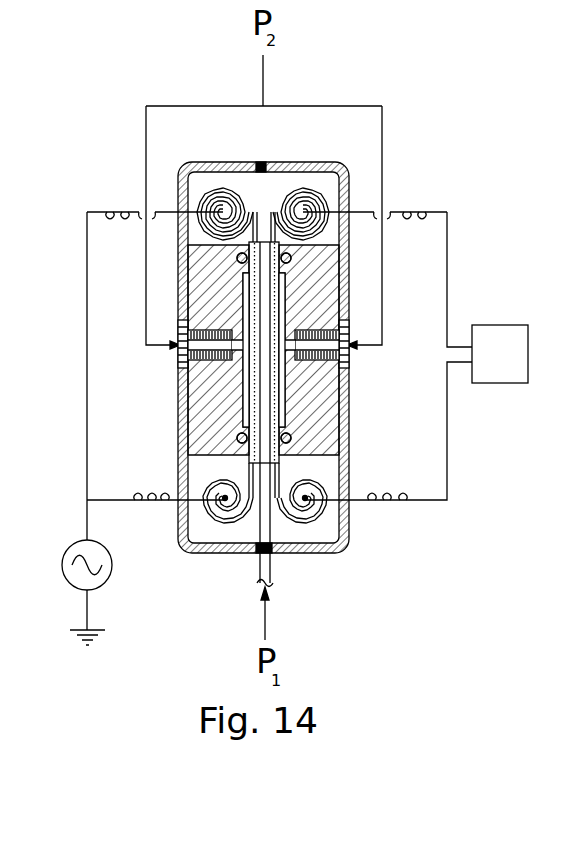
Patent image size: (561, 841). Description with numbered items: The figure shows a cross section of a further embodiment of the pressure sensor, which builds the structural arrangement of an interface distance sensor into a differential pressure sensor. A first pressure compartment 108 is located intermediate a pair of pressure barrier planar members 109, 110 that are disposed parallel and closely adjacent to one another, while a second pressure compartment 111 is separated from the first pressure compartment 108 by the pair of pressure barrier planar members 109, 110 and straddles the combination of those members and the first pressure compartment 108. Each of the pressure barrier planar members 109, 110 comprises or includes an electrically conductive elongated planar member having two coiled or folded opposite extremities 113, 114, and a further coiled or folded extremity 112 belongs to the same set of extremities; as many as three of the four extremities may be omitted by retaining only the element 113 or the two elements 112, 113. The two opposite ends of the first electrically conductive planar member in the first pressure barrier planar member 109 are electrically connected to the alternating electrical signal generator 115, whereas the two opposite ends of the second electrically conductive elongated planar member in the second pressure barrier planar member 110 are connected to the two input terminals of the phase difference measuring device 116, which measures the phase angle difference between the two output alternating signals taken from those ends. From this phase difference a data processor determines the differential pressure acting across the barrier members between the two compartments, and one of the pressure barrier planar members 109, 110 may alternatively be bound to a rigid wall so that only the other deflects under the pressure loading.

The first pressure compartment 108 is at (273, 375).
The first pressure barrier planar member 109 is at (250, 374).
The second pressure barrier planar member 110 is at (278, 400).
The second pressure compartment 111 is at (243, 403).
The coiled or folded extremity 112 is at (320, 180).
The coiled or folded extremity 113 is at (203, 180).
The coiled or folded extremity 114 is at (190, 537).
The alternating electrical signal generator 115 is at (110, 580).
The phase difference measuring device 116 is at (495, 384).